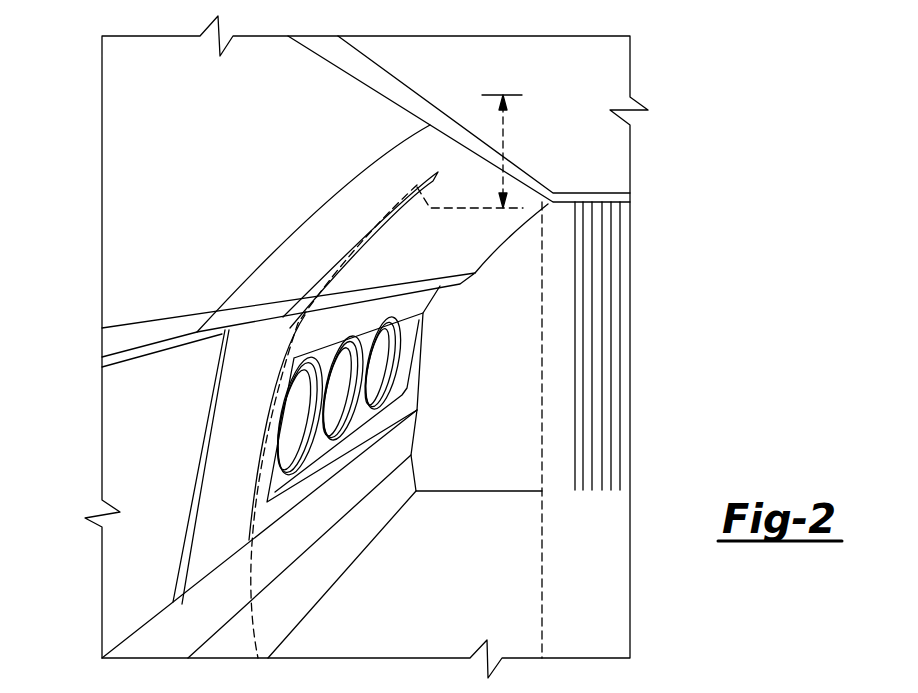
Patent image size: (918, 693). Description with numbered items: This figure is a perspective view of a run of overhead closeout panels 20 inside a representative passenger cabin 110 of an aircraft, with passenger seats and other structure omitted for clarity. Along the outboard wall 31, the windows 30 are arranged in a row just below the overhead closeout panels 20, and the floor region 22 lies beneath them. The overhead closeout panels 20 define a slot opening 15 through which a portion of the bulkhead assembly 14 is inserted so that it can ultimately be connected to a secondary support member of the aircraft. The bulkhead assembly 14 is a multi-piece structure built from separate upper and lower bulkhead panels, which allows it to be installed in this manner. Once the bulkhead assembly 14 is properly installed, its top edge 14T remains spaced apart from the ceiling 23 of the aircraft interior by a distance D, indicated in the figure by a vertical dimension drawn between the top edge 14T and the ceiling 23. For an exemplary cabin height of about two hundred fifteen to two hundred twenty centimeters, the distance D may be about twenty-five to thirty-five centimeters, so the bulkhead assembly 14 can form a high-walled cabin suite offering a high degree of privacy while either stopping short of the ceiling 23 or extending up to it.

The passenger cabin 110 is at (694, 148).
The bulkhead assembly 14 is at (542, 312).
The top edge 14T is at (523, 208).
The slot opening 15 is at (340, 250).
The overhead closeout panels 20 is at (137, 152).
The floor 22 is at (468, 587).
The ceiling 23 is at (605, 75).
The windows 30 is at (387, 372).
The outboard wall 31 is at (320, 333).
The distance D is at (502, 151).